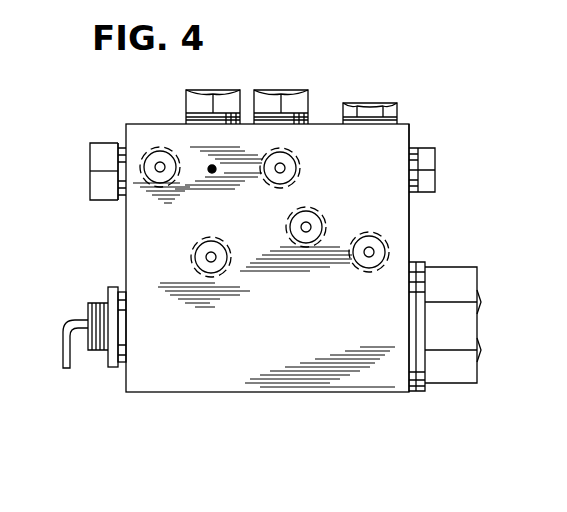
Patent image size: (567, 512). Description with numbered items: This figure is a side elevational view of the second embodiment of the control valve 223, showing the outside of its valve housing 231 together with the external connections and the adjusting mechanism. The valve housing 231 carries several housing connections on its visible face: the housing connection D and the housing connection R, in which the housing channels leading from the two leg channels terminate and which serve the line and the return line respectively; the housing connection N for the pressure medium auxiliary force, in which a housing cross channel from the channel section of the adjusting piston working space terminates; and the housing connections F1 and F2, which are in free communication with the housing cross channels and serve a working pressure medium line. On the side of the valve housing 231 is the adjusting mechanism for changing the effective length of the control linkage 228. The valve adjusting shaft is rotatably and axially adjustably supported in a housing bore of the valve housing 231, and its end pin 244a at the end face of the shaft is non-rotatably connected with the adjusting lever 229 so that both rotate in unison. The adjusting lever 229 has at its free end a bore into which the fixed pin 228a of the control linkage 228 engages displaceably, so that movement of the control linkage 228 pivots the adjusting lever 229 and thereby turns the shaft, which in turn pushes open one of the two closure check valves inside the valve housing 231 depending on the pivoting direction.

The control valve 223 is at (323, 118).
The valve housing 231 is at (412, 237).
The adjusting lever 229 is at (112, 370).
The end pin 244a is at (100, 306).
The fixed pin 228a is at (86, 324).
The control linkage 228 is at (62, 362).
The housing connection F1 is at (156, 166).
The housing connection D is at (285, 168).
The housing connection F2 is at (311, 227).
The housing connection R is at (216, 257).
The housing connection N is at (369, 257).